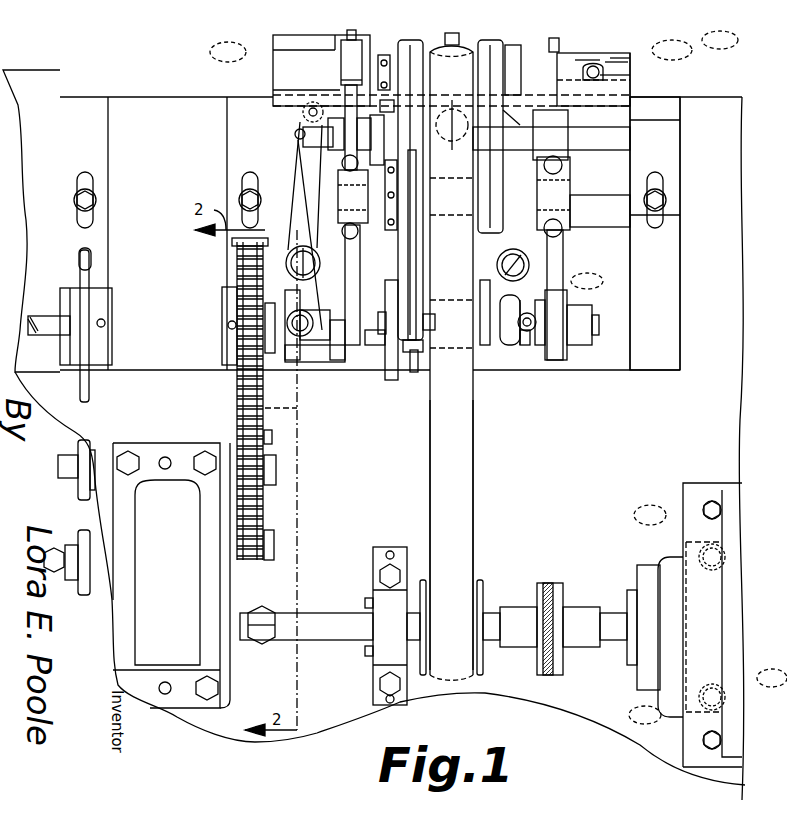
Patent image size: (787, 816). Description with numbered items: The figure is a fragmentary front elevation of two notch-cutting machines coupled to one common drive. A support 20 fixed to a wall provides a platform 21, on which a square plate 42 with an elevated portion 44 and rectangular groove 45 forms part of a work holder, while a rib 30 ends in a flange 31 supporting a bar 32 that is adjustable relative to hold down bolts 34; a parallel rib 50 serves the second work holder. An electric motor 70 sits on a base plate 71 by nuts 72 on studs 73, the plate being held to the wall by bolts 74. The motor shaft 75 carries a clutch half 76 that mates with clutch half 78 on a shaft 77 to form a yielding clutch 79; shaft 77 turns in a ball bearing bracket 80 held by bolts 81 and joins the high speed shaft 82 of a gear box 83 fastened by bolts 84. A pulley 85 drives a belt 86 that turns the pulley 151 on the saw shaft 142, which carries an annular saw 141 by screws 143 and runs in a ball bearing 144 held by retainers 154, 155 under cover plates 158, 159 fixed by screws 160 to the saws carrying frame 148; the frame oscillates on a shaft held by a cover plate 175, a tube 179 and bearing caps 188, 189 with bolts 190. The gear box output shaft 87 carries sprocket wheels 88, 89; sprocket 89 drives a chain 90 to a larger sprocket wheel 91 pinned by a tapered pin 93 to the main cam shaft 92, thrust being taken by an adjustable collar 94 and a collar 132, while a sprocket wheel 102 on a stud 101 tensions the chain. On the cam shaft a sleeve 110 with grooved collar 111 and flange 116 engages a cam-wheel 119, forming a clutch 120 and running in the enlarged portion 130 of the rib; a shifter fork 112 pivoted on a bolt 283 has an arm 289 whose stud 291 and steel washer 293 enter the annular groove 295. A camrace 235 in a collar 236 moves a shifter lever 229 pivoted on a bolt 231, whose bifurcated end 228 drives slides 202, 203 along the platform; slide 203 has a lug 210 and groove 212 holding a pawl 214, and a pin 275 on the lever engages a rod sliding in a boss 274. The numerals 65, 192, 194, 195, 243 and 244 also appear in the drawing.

The support 20 is at (665, 110).
The platform 21 is at (273, 92).
The rib 30 is at (360, 264).
The flange 31 is at (345, 78).
The bar 32 is at (364, 52).
The hold down bolts 34 is at (353, 30).
The square plate 42 is at (600, 60).
The elevated portion 44 is at (566, 52).
The rectangular groove 45 is at (556, 42).
The rib 50 is at (565, 270).
The shaft 65 is at (449, 40).
The electric motor 70 is at (705, 640).
The base plate 71 is at (702, 575).
The nuts 72 is at (710, 501).
The studs 73 is at (716, 502).
The bolts 74 is at (722, 696).
The motor shaft 75 is at (615, 612).
The clutch half 76 is at (568, 615).
The shaft 77 is at (328, 627).
The clutch half 78 is at (540, 607).
The yielding clutch 79 is at (548, 603).
The ball bearing bracket 80 is at (385, 605).
The bolts 81 is at (385, 548).
The high speed shaft 82 is at (270, 598).
The gear box 83 is at (172, 628).
The bolts 84 is at (130, 458).
The pulley 85 is at (482, 580).
The driving belt 86 is at (460, 497).
The shaft 87 is at (92, 558).
The sprocket wheel 88 is at (84, 597).
The sprocket wheel 89 is at (268, 536).
The chain 90 is at (264, 500).
The sprocket wheel 91 is at (237, 272).
The main cam shaft 92 is at (600, 322).
The tapered pin 93 is at (232, 325).
The adjustable collar 94 is at (578, 312).
The projecting stud 101 is at (276, 470).
The sprocket wheel 102 is at (272, 440).
The sleeve 110 is at (485, 347).
The grooved collar 111 is at (520, 347).
The shifter fork 112 is at (508, 262).
The flange 116 is at (414, 374).
The cam-wheel 119 is at (392, 380).
The clutch 120 is at (410, 354).
The enlarged portion 130 is at (356, 365).
The collar 132 is at (292, 362).
The annular saw 141 is at (593, 89).
The shaft 142 is at (378, 66).
The screws 143 is at (580, 58).
The ball bearing 144 is at (404, 262).
The saws carrying frame 148 is at (378, 190).
The pulley 151 is at (452, 125).
The ball bearing retainer 154 is at (375, 81).
The ball bearing retainer 155 is at (532, 71).
The cover plate 158 is at (395, 113).
The cover plate 159 is at (524, 114).
The screws 160 is at (622, 142).
The cover plate 175 is at (543, 163).
The tube 179 is at (553, 193).
The bearing cap 188 is at (350, 196).
The bearing cap 189 is at (570, 184).
The bolts 190 is at (348, 238).
The bolt 192 is at (435, 323).
The bolt 194 is at (380, 325).
The plate 195 is at (390, 140).
The slide 202 is at (228, 52).
The slide 203 is at (672, 50).
The lug 210 is at (622, 62).
The groove 212 is at (720, 40).
The pawl 214 is at (618, 58).
The bifurcated end 228 is at (305, 113).
The shifter lever 229 is at (300, 150).
The bolt 231 is at (314, 292).
The camrace 235 is at (308, 377).
The collar 236 is at (308, 343).
The collar 243 is at (340, 152).
The frame slot 244 is at (628, 220).
The boss 274 is at (630, 140).
The pin 275 is at (300, 142).
The bolt 283 is at (518, 298).
The arm 289 is at (503, 323).
The stud 291 is at (546, 345).
The steel washer 293 is at (525, 340).
The annular groove 295 is at (587, 281).